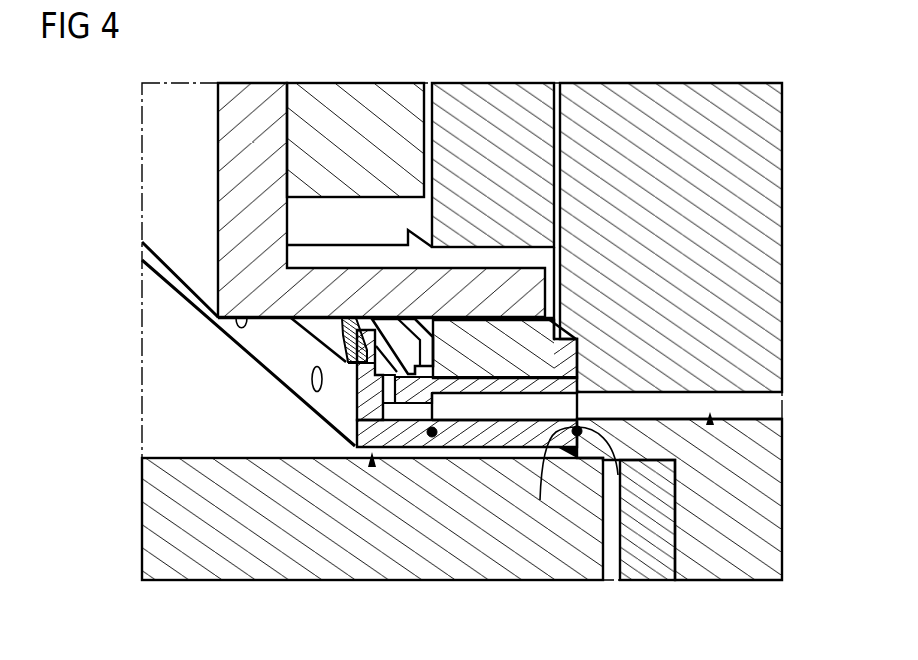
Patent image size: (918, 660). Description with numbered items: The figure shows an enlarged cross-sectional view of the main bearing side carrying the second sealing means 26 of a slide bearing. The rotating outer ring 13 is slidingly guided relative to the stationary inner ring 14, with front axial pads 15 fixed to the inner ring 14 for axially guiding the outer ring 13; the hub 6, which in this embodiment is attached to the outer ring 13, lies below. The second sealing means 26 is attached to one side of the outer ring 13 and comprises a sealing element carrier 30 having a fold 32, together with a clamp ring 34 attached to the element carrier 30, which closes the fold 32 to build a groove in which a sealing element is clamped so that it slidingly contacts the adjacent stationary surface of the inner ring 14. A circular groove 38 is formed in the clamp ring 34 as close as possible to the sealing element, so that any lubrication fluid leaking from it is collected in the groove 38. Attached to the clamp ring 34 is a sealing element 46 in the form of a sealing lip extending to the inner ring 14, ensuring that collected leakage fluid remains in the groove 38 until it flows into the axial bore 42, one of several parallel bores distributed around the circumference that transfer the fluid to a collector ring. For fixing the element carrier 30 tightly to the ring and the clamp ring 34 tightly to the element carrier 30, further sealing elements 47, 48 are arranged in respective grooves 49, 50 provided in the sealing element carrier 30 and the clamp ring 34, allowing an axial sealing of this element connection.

The hub 6 is at (150, 543).
The outer ring 13 is at (695, 100).
The inner ring 14 is at (256, 95).
The front axial pads 15 is at (527, 90).
The second sealing means 26 is at (372, 467).
The sealing element carrier 30 is at (470, 437).
The fold 32 is at (516, 340).
The clamp ring 34 is at (366, 400).
The groove 38 is at (390, 366).
The axial bore 42 is at (711, 425).
The sealing element 46 is at (326, 336).
The further sealing element 47 is at (540, 500).
The further sealing element 48 is at (434, 437).
The groove 49 is at (618, 475).
The groove 50 is at (423, 419).